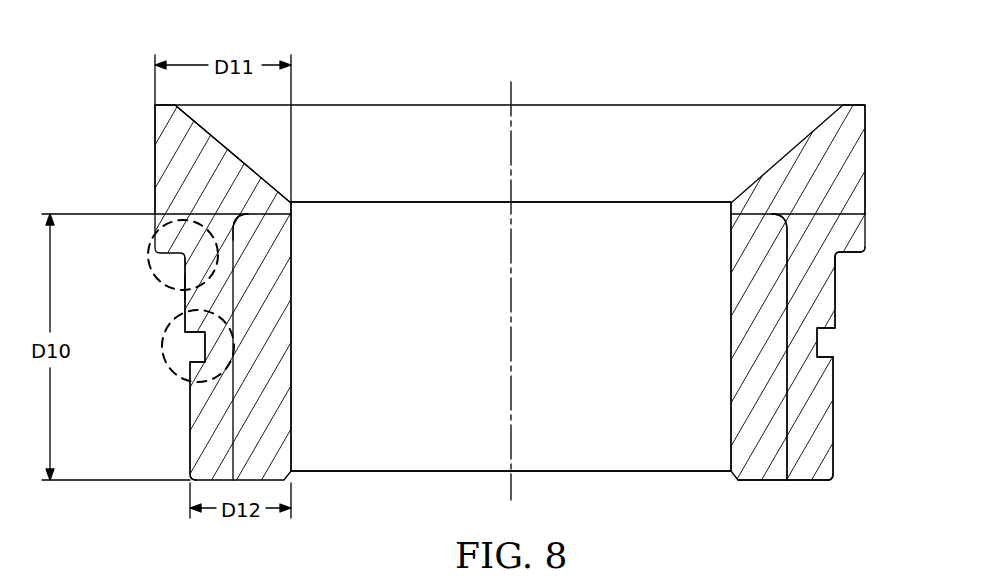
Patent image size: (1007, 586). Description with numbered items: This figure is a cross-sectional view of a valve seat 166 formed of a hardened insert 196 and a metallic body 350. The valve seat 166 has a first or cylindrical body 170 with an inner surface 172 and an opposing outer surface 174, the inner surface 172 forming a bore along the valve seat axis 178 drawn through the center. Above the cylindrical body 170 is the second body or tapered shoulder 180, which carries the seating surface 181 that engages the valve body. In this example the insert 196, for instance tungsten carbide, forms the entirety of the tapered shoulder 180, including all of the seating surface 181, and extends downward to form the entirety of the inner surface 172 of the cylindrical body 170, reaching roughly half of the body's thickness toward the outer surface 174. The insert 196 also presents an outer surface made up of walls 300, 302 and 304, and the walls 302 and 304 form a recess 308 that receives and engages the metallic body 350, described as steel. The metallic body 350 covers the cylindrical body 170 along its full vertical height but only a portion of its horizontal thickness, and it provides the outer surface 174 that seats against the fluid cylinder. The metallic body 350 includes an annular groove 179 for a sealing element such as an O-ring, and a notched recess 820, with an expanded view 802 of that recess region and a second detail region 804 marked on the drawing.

The valve seat 166 is at (756, 84).
The first or cylindrical body 170 is at (294, 420).
The inner surface 172 is at (295, 312).
The outer surface 174 is at (190, 448).
The valve seat axis 178 is at (508, 180).
The annular groove 179 is at (203, 344).
The second body 180 is at (155, 162).
The seating surface 181 is at (245, 170).
The insert 196 is at (294, 254).
The wall 300 is at (868, 165).
The wall 302 is at (848, 243).
The wall 304 is at (790, 415).
The recess 308 is at (824, 488).
The metallic body 350 is at (197, 408).
The expanded view 802 is at (148, 268).
The detail region 804 is at (162, 357).
The notched recess 820 is at (176, 288).